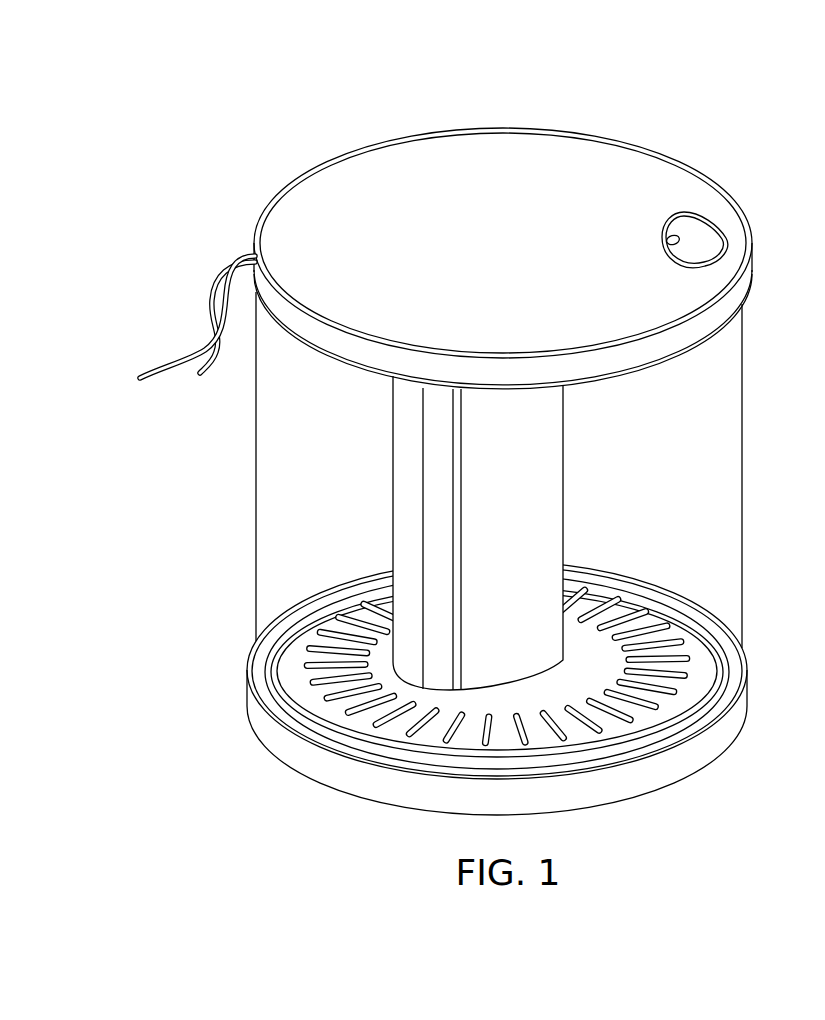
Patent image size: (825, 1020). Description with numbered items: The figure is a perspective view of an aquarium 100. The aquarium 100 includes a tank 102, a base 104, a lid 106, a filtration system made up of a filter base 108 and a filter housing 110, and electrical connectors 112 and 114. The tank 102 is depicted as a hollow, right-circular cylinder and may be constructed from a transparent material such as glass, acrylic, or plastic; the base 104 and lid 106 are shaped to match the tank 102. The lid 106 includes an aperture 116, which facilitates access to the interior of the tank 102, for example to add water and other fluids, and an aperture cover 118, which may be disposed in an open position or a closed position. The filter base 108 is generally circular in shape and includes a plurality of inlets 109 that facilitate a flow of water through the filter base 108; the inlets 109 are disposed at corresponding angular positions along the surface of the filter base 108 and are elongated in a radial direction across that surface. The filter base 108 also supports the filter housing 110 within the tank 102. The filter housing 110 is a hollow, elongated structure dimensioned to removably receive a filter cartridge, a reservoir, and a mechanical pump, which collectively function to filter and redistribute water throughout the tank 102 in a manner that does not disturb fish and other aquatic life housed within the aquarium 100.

The aquarium 100 is at (708, 123).
The tank 102 is at (745, 410).
The base 104 is at (746, 716).
The lid 106 is at (443, 272).
The filter base 108 is at (610, 728).
The inlets 109 is at (664, 653).
The filter housing 110 is at (568, 487).
The electrical connector 112 is at (223, 268).
The electrical connector 114 is at (176, 360).
The aperture 116 is at (666, 239).
The aperture cover 118 is at (707, 235).